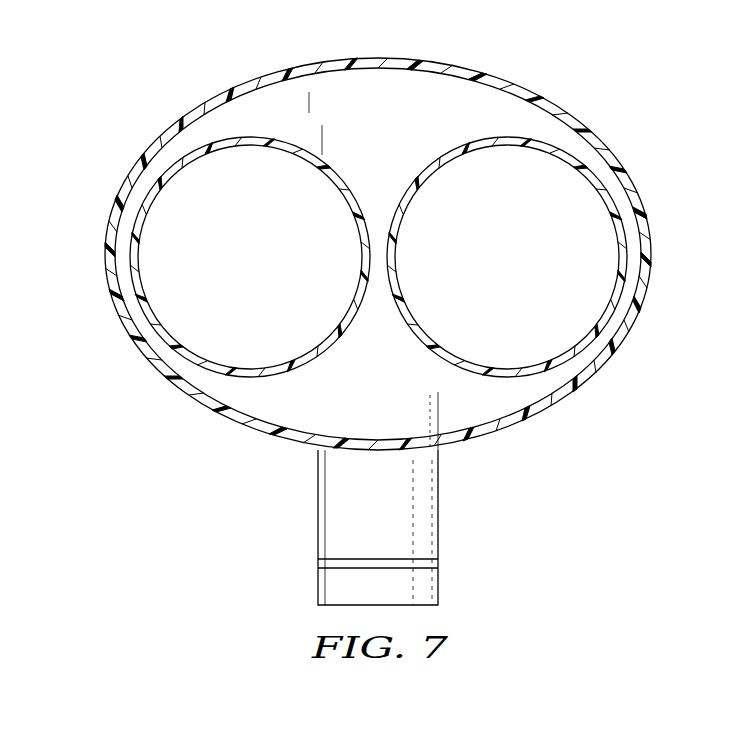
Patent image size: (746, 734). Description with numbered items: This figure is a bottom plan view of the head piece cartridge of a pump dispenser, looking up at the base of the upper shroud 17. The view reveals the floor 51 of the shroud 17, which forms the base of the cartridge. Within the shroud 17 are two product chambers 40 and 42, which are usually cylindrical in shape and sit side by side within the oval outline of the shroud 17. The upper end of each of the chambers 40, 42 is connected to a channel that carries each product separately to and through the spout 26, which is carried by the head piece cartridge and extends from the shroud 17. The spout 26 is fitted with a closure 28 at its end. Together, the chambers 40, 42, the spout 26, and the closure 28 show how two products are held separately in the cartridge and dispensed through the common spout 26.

The upper shroud 17 is at (633, 320).
The floor 51 is at (435, 115).
The product chamber 42 is at (157, 242).
The product chamber 40 is at (602, 230).
The spout 26 is at (427, 502).
The closure 28 is at (318, 588).